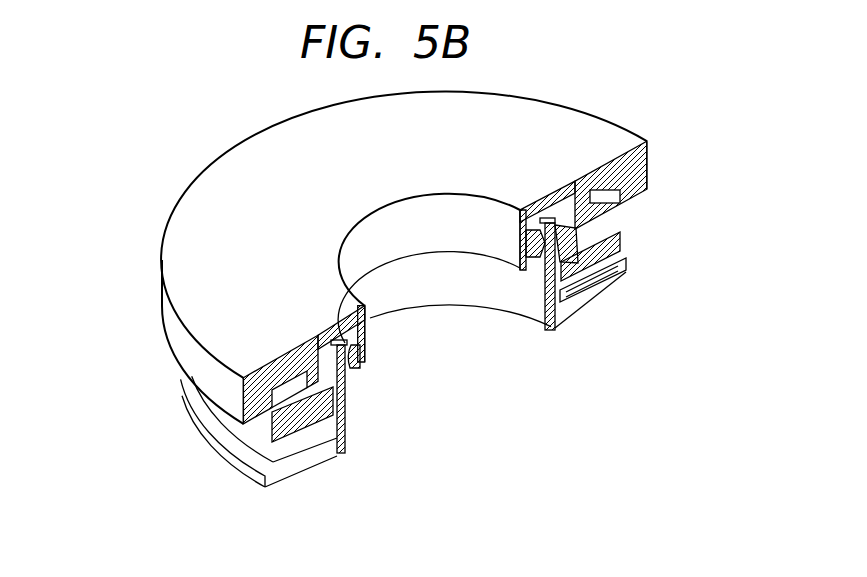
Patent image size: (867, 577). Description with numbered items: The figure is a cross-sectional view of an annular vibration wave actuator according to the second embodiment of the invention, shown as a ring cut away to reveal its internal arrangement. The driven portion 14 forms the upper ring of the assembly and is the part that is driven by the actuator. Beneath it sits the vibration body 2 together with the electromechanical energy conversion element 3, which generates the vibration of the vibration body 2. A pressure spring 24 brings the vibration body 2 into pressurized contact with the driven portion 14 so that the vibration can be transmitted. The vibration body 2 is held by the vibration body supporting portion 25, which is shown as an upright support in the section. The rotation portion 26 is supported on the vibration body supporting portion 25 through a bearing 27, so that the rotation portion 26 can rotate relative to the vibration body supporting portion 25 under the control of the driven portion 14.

The rotation portion 26 is at (217, 190).
The driven portion 14 is at (647, 170).
The bearing 27 is at (340, 316).
The vibration body supporting portion 25 is at (339, 456).
The pressure spring 24 is at (277, 445).
The vibration body 2 is at (620, 236).
The electromechanical energy conversion element 3 is at (623, 256).